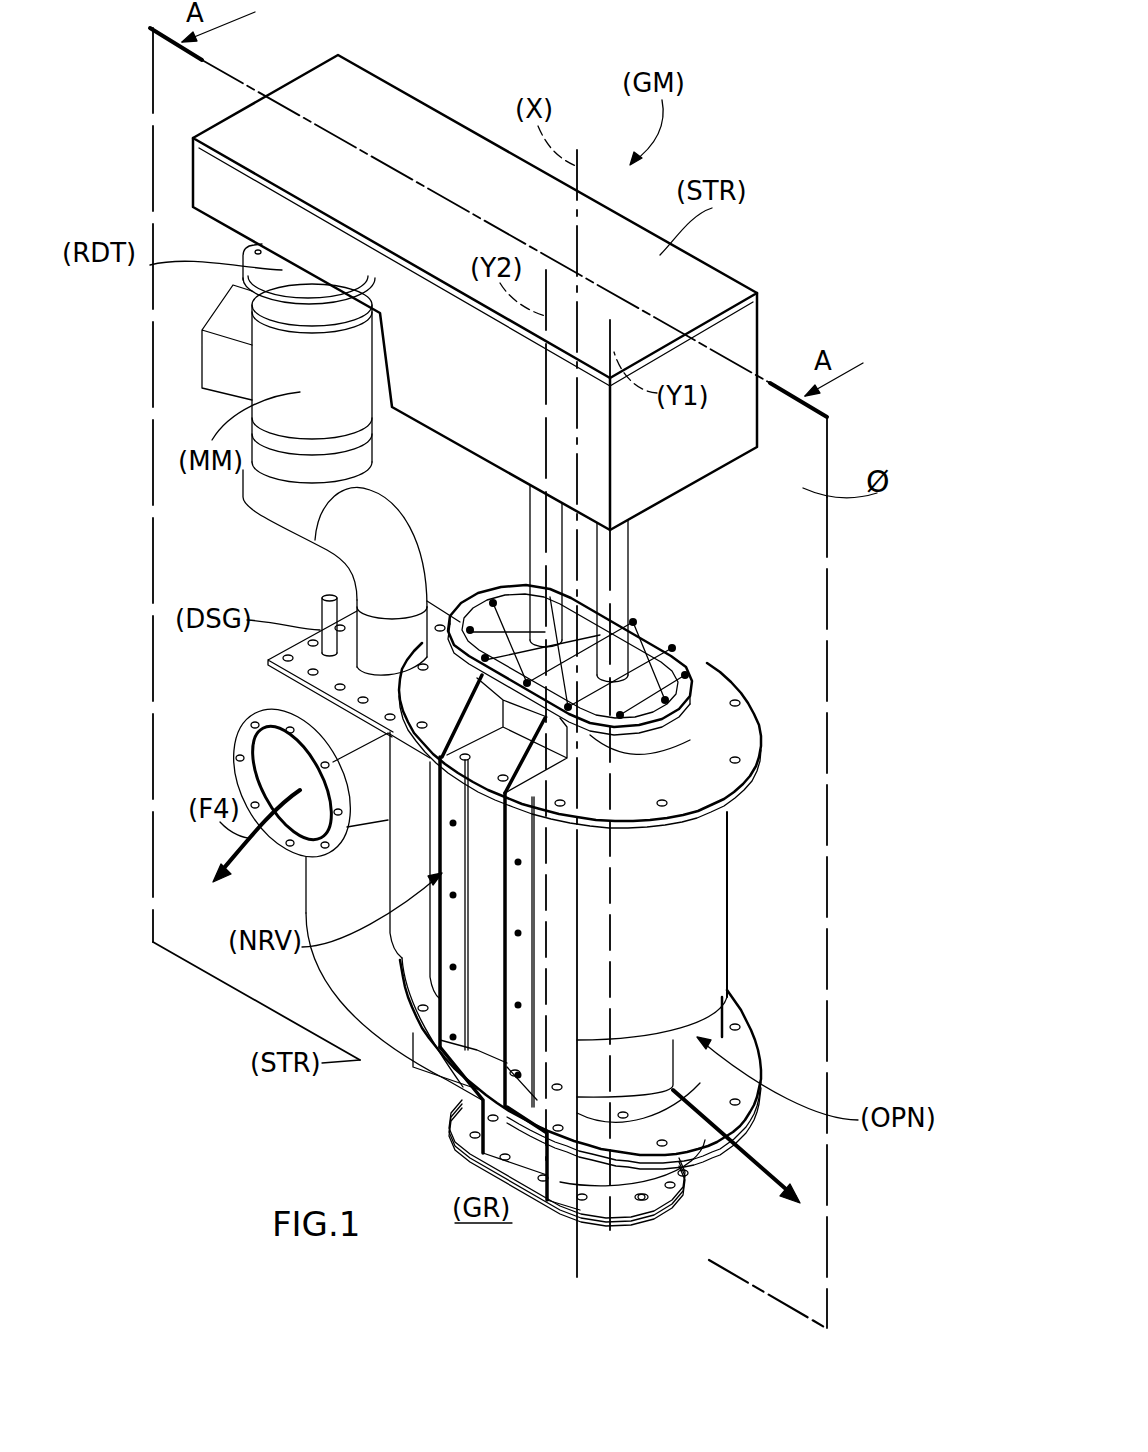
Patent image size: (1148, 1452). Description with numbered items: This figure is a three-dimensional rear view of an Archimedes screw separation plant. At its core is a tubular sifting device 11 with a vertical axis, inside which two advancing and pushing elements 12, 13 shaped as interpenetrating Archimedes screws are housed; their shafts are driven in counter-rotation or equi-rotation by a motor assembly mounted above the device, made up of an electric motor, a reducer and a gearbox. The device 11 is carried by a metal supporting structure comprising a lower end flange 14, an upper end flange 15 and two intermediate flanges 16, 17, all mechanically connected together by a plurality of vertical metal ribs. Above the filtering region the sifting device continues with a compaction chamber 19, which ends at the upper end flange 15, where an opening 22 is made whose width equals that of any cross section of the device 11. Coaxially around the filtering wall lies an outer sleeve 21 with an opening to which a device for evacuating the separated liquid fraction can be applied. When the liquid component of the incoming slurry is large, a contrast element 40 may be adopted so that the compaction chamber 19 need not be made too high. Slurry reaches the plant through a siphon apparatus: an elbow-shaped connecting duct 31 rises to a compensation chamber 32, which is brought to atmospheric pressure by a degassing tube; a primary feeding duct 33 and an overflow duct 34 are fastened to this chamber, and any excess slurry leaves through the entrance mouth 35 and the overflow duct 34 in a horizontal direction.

The tubular sifting device 11 is at (690, 875).
The advancing and pushing element 12 is at (620, 593).
The advancing and pushing element 13 is at (538, 574).
The lower end flange 14 is at (673, 1183).
The upper end flange 15 is at (697, 657).
The intermediate flange 16 is at (747, 1043).
The intermediate flange 17 is at (727, 773).
The compaction chamber 19 is at (652, 747).
The outer sleeve 21 is at (710, 908).
The opening 22 is at (663, 648).
The connecting duct 31 is at (470, 912).
The compensation chamber 32 is at (340, 895).
The primary feeding duct 33 is at (355, 548).
The overflow duct 34 is at (273, 832).
The entrance mouth 35 is at (240, 757).
The contrast element 40 is at (487, 605).